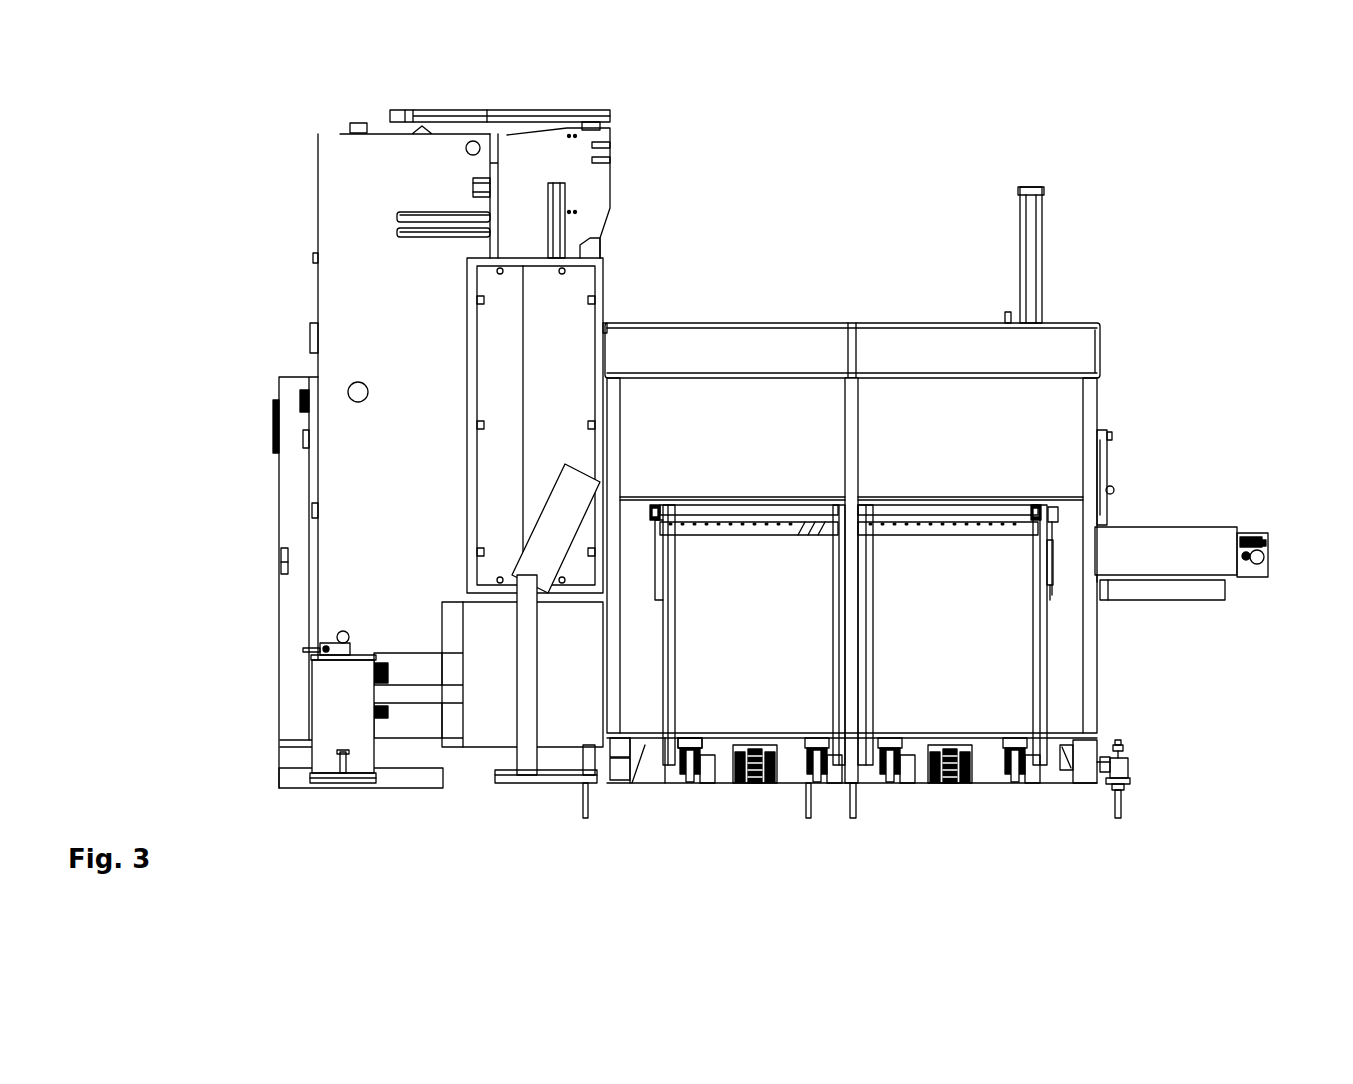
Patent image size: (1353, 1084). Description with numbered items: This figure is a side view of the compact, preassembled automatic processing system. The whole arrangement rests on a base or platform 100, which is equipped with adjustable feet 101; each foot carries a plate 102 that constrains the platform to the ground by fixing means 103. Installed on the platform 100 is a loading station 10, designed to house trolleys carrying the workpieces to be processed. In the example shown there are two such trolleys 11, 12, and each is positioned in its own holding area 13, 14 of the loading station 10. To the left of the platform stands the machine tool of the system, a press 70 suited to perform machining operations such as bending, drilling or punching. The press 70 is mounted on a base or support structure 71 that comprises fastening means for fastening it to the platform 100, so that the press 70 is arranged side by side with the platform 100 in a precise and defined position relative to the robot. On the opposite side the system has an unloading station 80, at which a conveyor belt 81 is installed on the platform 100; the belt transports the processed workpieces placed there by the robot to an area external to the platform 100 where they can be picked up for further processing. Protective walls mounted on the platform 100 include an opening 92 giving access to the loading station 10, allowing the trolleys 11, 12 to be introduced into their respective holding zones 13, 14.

The loading station 10 is at (885, 352).
The trolley 11 is at (760, 694).
The trolley 12 is at (988, 700).
The holding area 13 is at (698, 798).
The holding area 14 is at (935, 805).
The press 70 is at (283, 172).
The support structure 71 is at (344, 705).
The unloading station 80 is at (1208, 500).
The conveyor belt 81 is at (1268, 553).
The opening 92 is at (1067, 553).
The platform 100 is at (1086, 767).
The adjustable feet 101 is at (1138, 757).
The plates 102 is at (1123, 777).
The fixing means 103 is at (1118, 802).